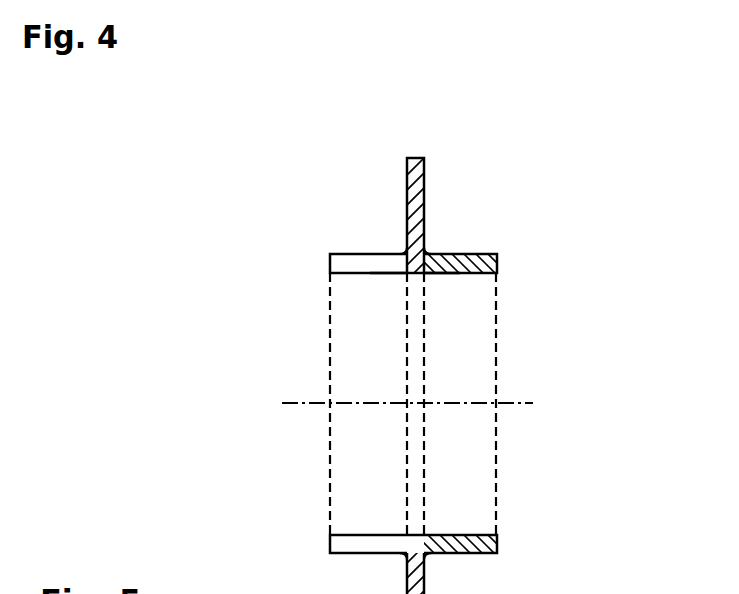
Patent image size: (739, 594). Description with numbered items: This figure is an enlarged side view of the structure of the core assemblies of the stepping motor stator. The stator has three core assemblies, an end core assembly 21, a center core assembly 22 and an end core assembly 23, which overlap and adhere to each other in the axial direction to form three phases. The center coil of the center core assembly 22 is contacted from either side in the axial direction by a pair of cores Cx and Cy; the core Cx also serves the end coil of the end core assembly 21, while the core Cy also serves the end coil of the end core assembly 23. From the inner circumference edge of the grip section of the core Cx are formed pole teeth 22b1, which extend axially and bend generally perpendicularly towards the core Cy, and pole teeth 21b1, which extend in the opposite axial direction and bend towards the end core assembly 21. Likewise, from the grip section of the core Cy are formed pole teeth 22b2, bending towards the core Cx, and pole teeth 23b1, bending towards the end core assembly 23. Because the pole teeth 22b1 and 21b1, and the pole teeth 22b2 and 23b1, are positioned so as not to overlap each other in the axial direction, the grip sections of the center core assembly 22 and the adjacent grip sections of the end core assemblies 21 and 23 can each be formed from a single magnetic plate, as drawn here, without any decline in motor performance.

The end core assembly 21 is at (372, 378).
The end core assembly 23 is at (377, 245).
The center core assembly 22 is at (450, 237).
The pole teeth 21b1 is at (297, 307).
The pole teeth 23b1 is at (377, 271).
The pole teeth 22b1 is at (534, 322).
The pole teeth 22b2 is at (453, 275).
The core Cx is at (463, 347).
The core Cy is at (415, 157).